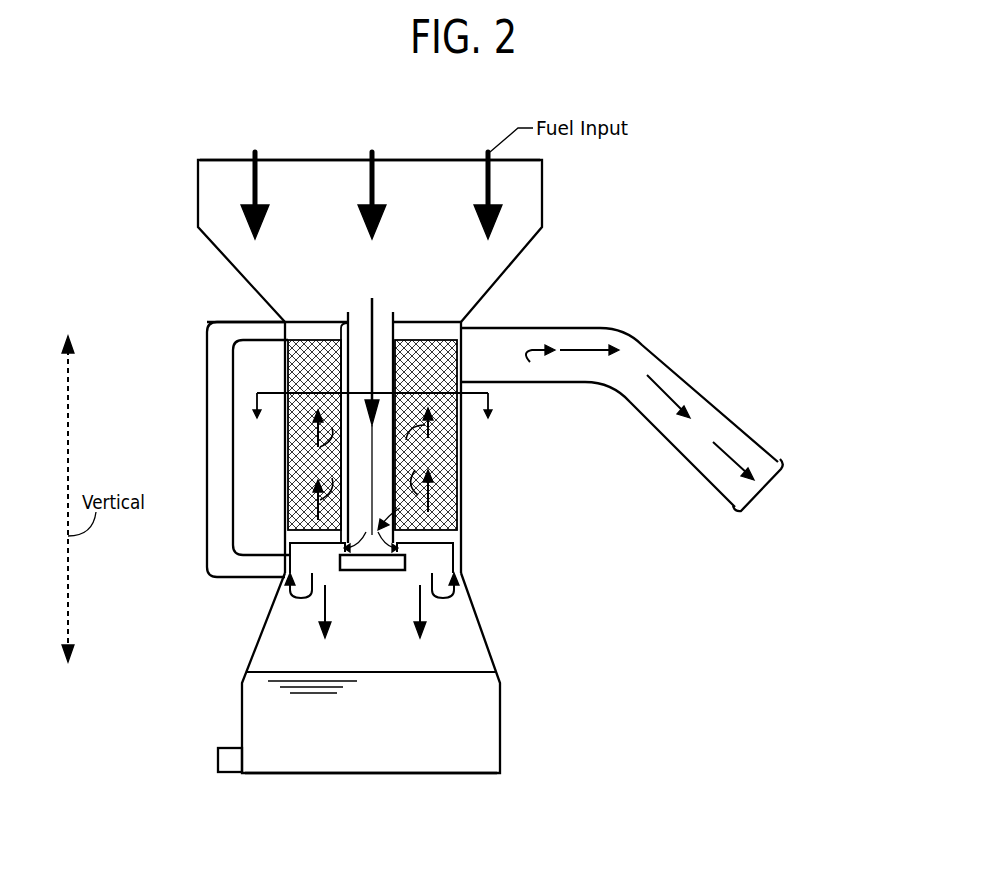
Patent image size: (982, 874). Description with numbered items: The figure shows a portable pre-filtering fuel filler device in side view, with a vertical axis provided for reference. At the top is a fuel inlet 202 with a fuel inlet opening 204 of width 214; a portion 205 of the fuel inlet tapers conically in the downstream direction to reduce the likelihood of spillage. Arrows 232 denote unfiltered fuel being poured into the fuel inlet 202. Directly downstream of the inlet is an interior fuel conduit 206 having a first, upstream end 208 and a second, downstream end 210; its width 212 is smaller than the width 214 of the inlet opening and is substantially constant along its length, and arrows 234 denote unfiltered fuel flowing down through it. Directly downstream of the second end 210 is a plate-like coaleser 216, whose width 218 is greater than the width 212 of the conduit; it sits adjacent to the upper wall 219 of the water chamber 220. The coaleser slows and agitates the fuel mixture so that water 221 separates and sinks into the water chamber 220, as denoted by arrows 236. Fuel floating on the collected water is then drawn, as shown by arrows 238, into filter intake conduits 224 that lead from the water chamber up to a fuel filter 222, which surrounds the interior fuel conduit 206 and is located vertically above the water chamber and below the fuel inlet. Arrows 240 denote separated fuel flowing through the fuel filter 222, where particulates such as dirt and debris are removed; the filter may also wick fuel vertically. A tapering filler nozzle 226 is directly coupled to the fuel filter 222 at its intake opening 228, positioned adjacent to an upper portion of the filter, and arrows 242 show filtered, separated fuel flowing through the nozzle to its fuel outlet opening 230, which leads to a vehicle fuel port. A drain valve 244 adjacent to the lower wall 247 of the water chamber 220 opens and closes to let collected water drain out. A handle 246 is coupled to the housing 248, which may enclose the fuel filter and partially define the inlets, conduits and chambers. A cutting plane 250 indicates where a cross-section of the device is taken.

The fuel inlet 202 is at (190, 160).
The fuel inlet opening 204 is at (550, 152).
The tapered portion of the fuel inlet 205 is at (509, 286).
The interior fuel conduit 206 is at (341, 395).
The first end of the interior fuel conduit 208 is at (397, 312).
The second end of the interior fuel conduit 210 is at (392, 425).
The width of the interior fuel conduit 212 is at (392, 268).
The width of the fuel inlet opening 214 is at (542, 105).
The coaleser 216 is at (392, 565).
The width of the coaleser 218 is at (405, 587).
The upper wall of the water chamber 219 is at (337, 546).
The water chamber 220 is at (520, 580).
The water 221 is at (384, 732).
The fuel filter 222 is at (306, 447).
The filter intake conduits 224 is at (288, 555).
The filler nozzle 226 is at (674, 404).
The intake opening 228 is at (462, 353).
The fuel outlet opening 230 is at (778, 486).
The arrows denoting flow of unfiltered fuel through the fuel inlet 232 is at (484, 203).
The arrows denoting flow of unfiltered fuel through the fuel conduit 234 is at (380, 443).
The arrows denoting flow of water into the water chamber 236 is at (420, 606).
The arrows denoting flow of separated fuel into the filter intake conduits 238 is at (451, 600).
The arrows denoting flow of separated fuel through the fuel filter 240 is at (370, 464).
The arrows denoting flow of filtered fuel through the filler nozzle 242 is at (725, 452).
The drain valve 244 is at (218, 762).
The handle 246 is at (220, 425).
The lower wall of the water chamber 247 is at (275, 772).
The housing 248 is at (462, 486).
The cutting plane 250 is at (267, 392).